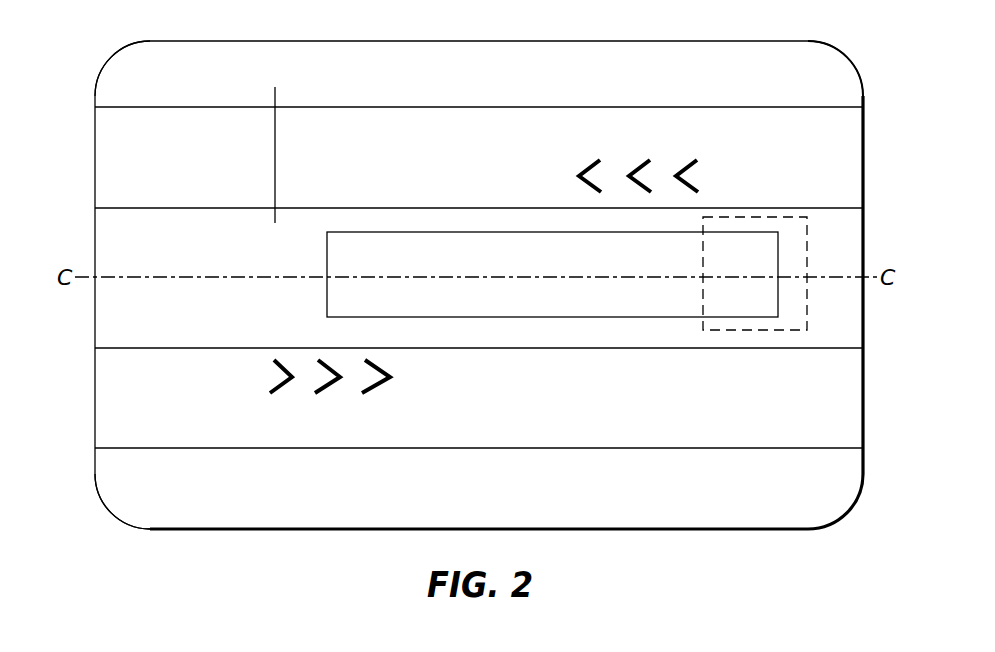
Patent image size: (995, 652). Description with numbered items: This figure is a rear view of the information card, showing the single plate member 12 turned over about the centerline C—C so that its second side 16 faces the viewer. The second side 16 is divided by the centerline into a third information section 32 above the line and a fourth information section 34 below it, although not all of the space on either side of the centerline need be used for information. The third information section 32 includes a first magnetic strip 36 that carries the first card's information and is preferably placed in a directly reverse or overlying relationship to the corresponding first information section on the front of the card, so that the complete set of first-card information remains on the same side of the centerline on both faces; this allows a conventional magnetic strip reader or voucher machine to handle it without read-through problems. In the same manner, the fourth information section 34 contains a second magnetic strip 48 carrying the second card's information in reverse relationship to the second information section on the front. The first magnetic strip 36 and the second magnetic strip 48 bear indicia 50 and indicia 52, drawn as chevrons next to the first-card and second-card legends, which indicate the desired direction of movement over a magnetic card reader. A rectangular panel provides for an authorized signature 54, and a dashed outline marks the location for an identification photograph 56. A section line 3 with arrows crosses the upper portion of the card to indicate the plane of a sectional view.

The section line 3- 3 is at (300, 87).
The plate member 12 is at (868, 231).
The second side 16 is at (413, 505).
The third information section 32 is at (93, 90).
The fourth information section 34 is at (95, 473).
The first magnetic strip 36 is at (850, 130).
The second magnetic strip 48 is at (843, 387).
The indicia 50 is at (636, 168).
The indicia 52 is at (328, 389).
The authorized signature 54 is at (382, 256).
The identification photograph 56 is at (775, 332).